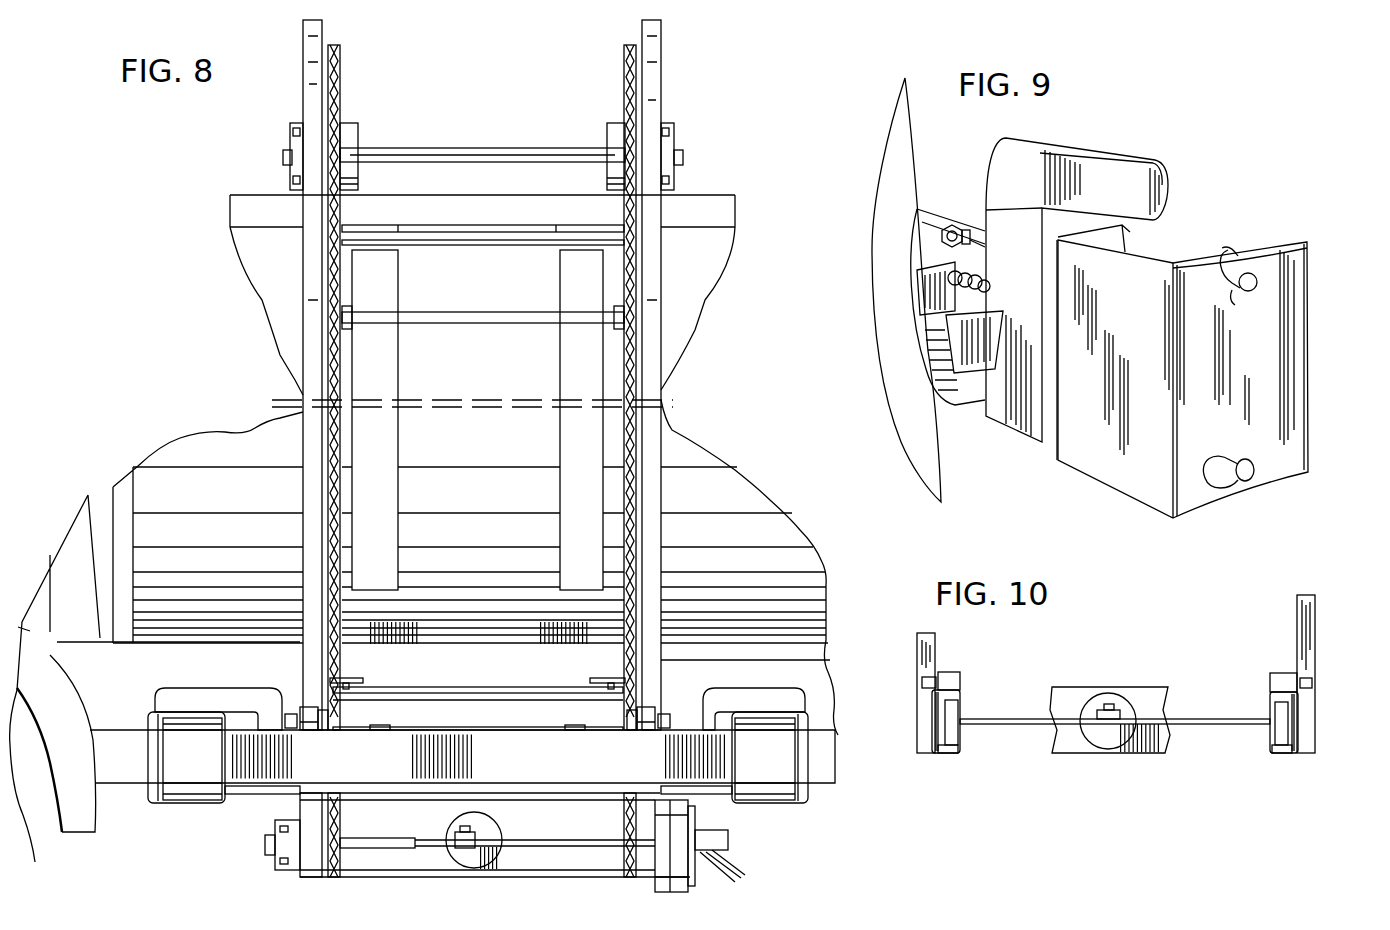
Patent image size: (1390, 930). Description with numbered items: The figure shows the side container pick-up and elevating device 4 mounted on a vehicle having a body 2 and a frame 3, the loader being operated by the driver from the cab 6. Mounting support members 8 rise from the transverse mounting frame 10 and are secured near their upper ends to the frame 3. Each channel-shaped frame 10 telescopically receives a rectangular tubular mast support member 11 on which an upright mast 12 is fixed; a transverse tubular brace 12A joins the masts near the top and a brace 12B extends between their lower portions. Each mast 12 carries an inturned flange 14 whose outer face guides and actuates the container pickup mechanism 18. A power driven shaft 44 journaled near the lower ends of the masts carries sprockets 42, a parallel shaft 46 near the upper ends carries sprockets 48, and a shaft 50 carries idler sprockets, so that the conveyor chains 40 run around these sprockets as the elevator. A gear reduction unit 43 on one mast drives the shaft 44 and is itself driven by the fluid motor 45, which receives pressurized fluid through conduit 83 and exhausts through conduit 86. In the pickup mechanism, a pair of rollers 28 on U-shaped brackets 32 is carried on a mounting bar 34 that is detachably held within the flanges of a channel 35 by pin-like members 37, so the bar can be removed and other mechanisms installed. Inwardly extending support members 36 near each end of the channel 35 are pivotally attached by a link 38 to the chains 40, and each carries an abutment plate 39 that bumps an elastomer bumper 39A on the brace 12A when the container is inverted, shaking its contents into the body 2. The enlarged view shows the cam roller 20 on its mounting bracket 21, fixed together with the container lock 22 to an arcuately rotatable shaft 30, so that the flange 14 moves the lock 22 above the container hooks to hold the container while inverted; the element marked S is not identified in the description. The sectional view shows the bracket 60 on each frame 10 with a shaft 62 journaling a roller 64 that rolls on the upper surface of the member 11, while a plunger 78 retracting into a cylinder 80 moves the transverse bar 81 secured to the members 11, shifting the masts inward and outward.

In FIG. 8, the body 2 is at (663, 384).
In FIG. 8, the frame 3 is at (840, 680).
In FIG. 8, the container pick-up and elevating device 4 is at (665, 128).
In FIG. 9, the container pick-up and elevating device 4 is at (880, 165).
In FIG. 8, the cab 6 is at (40, 578).
In FIG. 10, the mounting support members 8 is at (935, 655).
In FIG. 10, the transverse mounting frame 10 is at (950, 753).
In FIG. 10, the rectangular tubular mast support member 11 is at (958, 710).
In FIG. 8, the upright mast 12 is at (300, 282).
In FIG. 9, the upright mast 12 is at (885, 344).
In FIG. 8, the transverse tubular brace 12A is at (462, 242).
In FIG. 8, the brace 12B is at (465, 640).
In FIG. 8, the inturned flange 14 is at (305, 362).
In FIG. 9, the inturned flange 14 is at (915, 176).
In FIG. 8, the container pickup mechanism 18 is at (150, 806).
In FIG. 9, the container pickup mechanism 18 is at (1095, 478).
In FIG. 8, the cam roller 20 is at (308, 708).
In FIG. 9, the cam roller 20 is at (950, 224).
In FIG. 8, the mounting brackets 21 is at (290, 712).
In FIG. 9, the mounting brackets 21 is at (928, 245).
In FIG. 8, the container lock 22 is at (158, 690).
In FIG. 9, the container lock 22 is at (1117, 152).
In FIG. 8, the rollers 28 is at (205, 785).
In FIG. 8, the arcuately rotatable shaft 30 is at (245, 795).
In FIG. 8, the U-shaped brackets 32 is at (150, 772).
In FIG. 9, the U-shaped brackets 32 is at (1220, 218).
In FIG. 8, the mounting bar 34 is at (512, 738).
In FIG. 9, the mounting bar 34 is at (1054, 271).
In FIG. 8, the channel 35 is at (492, 735).
In FIG. 8, the inwardly extending support members 36 is at (318, 717).
In FIG. 8, the detachable pin-like members 37 is at (382, 727).
In FIG. 8, the link 38 is at (335, 680).
In FIG. 8, the abutment plate 39 is at (352, 683).
In FIG. 8, the elastomer bumper 39A is at (355, 225).
In FIG. 8, the conveyor chains 40 is at (342, 350).
In FIG. 8, the sprockets 42 is at (335, 870).
In FIG. 8, the gear reduction unit 43 is at (692, 878).
In FIG. 8, the power driven shaft 44 is at (405, 850).
In FIG. 8, the fluid motor 45 is at (728, 840).
In FIG. 8, the shaft 46 is at (493, 148).
In FIG. 8, the sprockets 48 is at (334, 45).
In FIG. 8, the shaft 50 is at (490, 312).
In FIG. 10, the bracket 60 is at (932, 720).
In FIG. 10, the shaft 62 is at (922, 683).
In FIG. 10, the roller 64 is at (958, 675).
In FIG. 8, the plunger 78 is at (490, 830).
In FIG. 10, the plunger 78 is at (1122, 713).
In FIG. 8, the cylinder 80 is at (465, 858).
In FIG. 10, the cylinder 80 is at (1112, 700).
In FIG. 8, the transverse bar 81 is at (440, 845).
In FIG. 10, the transverse bar 81 is at (1032, 720).
In FIG. 8, the conduit 83 is at (748, 880).
In FIG. 8, the conduit 86 is at (745, 875).
In FIG. 9, the spring S is at (928, 265).